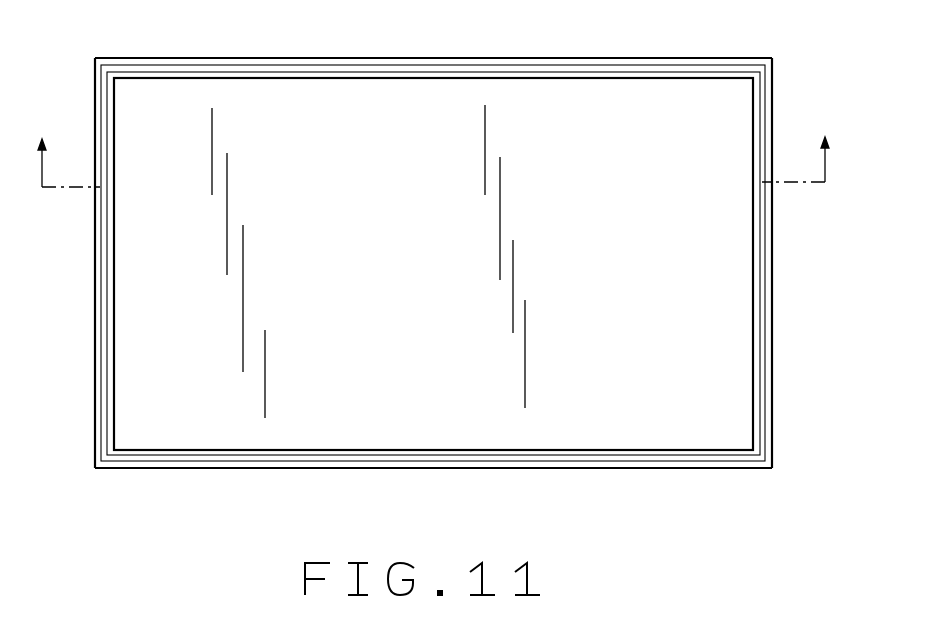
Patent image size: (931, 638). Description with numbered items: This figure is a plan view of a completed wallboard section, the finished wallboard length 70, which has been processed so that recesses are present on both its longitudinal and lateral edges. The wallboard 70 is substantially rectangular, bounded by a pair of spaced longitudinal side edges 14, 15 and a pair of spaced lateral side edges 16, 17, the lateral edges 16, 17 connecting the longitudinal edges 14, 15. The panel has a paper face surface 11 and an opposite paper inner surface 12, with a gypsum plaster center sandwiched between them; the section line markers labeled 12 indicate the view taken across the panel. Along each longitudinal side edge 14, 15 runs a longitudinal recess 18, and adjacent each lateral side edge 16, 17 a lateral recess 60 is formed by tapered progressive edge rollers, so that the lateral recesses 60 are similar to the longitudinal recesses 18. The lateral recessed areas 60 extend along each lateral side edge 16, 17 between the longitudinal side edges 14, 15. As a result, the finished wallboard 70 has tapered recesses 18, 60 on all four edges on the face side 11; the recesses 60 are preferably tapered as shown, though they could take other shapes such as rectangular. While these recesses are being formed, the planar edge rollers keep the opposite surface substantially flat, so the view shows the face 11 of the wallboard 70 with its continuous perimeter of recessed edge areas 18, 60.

The face surface 11 is at (575, 237).
The inner surface 12 is at (441, 145).
The longitudinal side edge 14 is at (482, 58).
The longitudinal side edge 15 is at (407, 468).
The lateral side edge 16 is at (100, 263).
The lateral side edge 17 is at (773, 222).
The longitudinal recess 18 is at (578, 67).
The lateral recess 60 is at (102, 288).
The finished wallboard length 70 is at (678, 425).